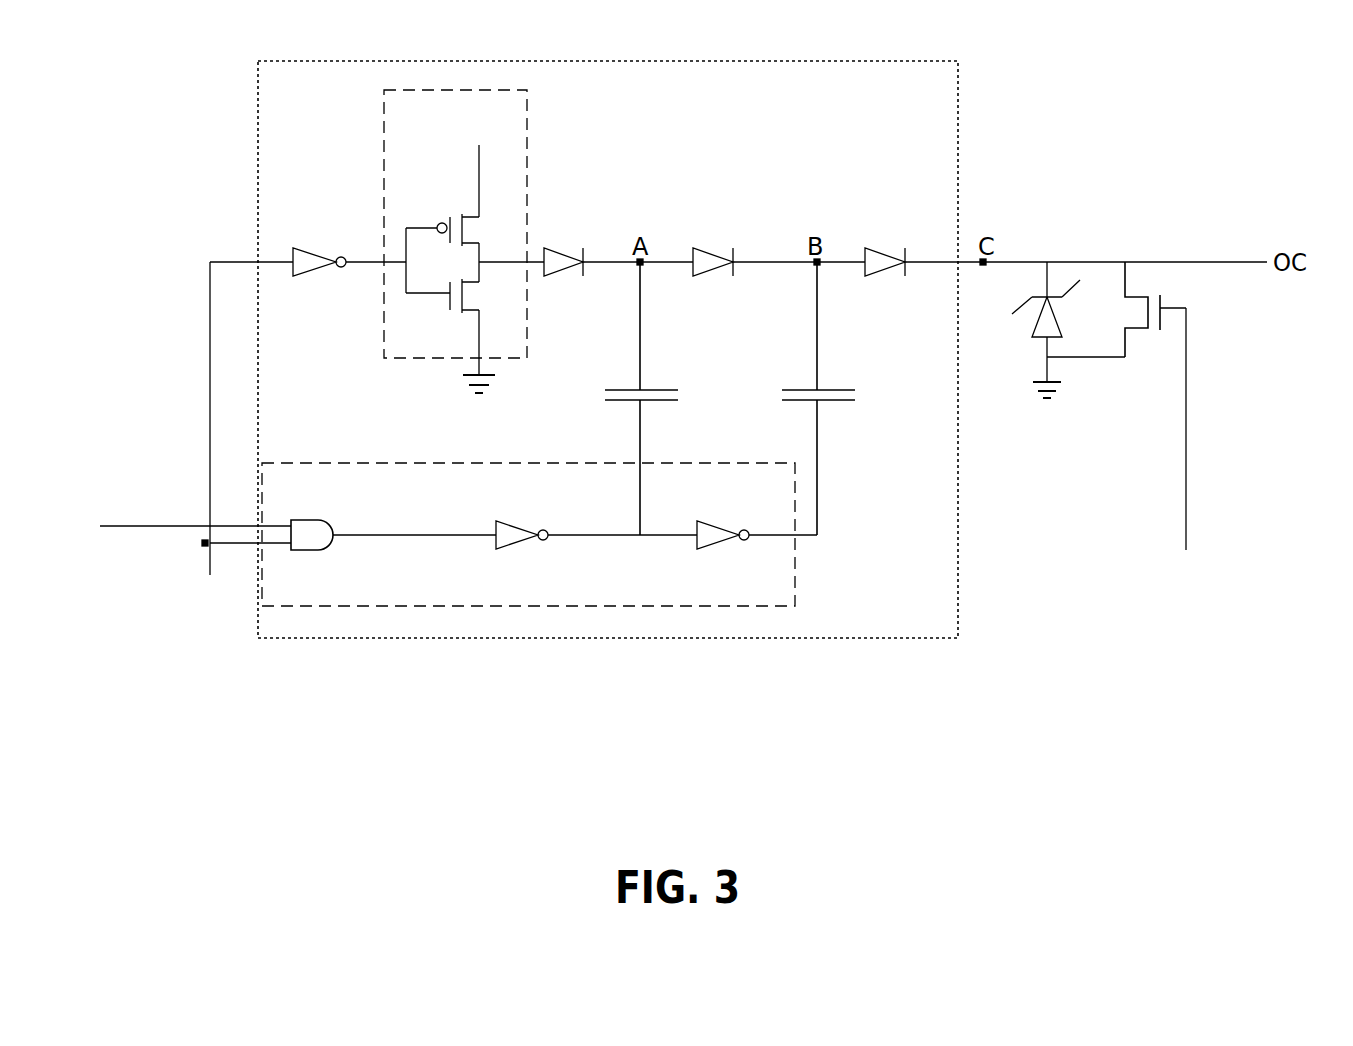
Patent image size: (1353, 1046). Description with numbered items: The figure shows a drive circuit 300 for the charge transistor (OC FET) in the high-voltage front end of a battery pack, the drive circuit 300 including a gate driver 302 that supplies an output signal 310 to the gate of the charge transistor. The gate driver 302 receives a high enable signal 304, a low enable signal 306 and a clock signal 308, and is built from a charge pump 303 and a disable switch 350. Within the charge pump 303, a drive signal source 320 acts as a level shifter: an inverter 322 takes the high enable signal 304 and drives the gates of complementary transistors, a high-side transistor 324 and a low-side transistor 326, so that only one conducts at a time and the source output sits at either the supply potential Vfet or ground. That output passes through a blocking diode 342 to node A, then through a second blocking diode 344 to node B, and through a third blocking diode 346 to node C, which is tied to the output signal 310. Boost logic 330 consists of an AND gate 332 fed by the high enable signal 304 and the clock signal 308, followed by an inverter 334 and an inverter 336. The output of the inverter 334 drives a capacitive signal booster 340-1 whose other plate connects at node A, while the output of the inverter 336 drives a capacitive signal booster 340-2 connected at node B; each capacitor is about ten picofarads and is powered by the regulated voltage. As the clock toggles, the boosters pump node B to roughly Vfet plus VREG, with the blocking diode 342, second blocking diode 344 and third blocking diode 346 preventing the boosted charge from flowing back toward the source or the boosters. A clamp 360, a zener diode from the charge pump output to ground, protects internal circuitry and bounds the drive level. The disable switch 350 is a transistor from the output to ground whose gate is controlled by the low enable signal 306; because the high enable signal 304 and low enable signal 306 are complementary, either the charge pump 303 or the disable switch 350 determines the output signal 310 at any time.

The drive circuit 300 is at (1108, 82).
The gate driver 302 is at (1177, 192).
The charge pump 303 is at (958, 128).
The high enable signal 304 is at (228, 459).
The low enable signal 306 is at (1189, 597).
The clock signal 308 is at (195, 512).
The output signal 310 is at (1160, 262).
The drive signal source 320 is at (485, 241).
The inverter 322 is at (312, 249).
The high-side transistor 324 is at (450, 214).
The low-side transistor 326 is at (450, 312).
The boost logic 330 is at (559, 534).
The AND gate 332 is at (320, 520).
The inverter 334 is at (513, 522).
The inverter 336 is at (713, 522).
The signal booster 340-1 is at (665, 390).
The signal booster 340-2 is at (843, 390).
The blocking diode 342 is at (553, 249).
The second blocking diode 344 is at (701, 249).
The third blocking diode 346 is at (876, 249).
The disable switch 350 is at (1161, 302).
The clamp 360 is at (1062, 330).